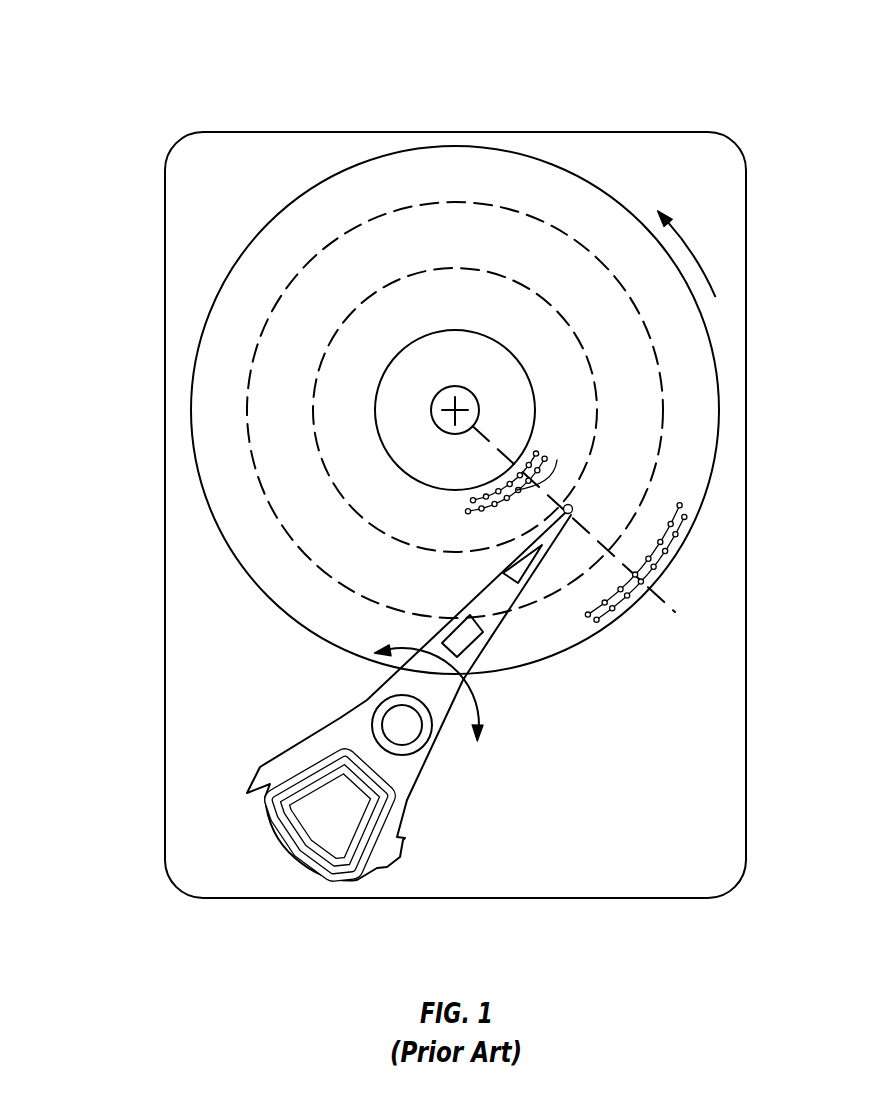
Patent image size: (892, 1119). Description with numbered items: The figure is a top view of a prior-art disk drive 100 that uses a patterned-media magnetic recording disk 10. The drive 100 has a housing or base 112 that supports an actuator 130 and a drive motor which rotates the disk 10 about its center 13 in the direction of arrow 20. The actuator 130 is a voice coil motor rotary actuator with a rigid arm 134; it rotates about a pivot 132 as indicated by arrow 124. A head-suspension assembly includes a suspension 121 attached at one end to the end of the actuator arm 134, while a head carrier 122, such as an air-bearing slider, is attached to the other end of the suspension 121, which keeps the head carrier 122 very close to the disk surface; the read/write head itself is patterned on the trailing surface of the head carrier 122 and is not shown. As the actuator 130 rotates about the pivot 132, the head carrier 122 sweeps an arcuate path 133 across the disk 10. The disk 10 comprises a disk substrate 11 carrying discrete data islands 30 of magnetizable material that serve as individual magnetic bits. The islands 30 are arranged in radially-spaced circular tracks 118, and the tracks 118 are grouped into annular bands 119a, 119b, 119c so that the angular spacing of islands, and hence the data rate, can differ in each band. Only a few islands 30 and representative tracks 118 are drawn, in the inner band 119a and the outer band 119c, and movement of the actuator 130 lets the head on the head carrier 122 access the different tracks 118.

The disk drive 100 is at (164, 52).
The housing or base 112 is at (678, 131).
The patterned magnetic recording disk 10 is at (332, 204).
The disk substrate 11 is at (707, 328).
The inner annular band 119a is at (480, 280).
The annular band 119b is at (498, 216).
The outer annular band 119c is at (584, 190).
The disk center 13 is at (463, 402).
The arrow indicating disk rotation direction 20 is at (688, 238).
The data islands 30 is at (607, 559).
The circular tracks 118 is at (556, 504).
The head carrier 122 is at (573, 509).
The arcuate path 133 is at (655, 592).
The actuator 130 is at (250, 777).
The suspension 121 is at (498, 578).
The rigid arm 134 is at (460, 615).
The pivot 132 is at (393, 720).
The arrow indicating actuator rotation 124 is at (480, 705).